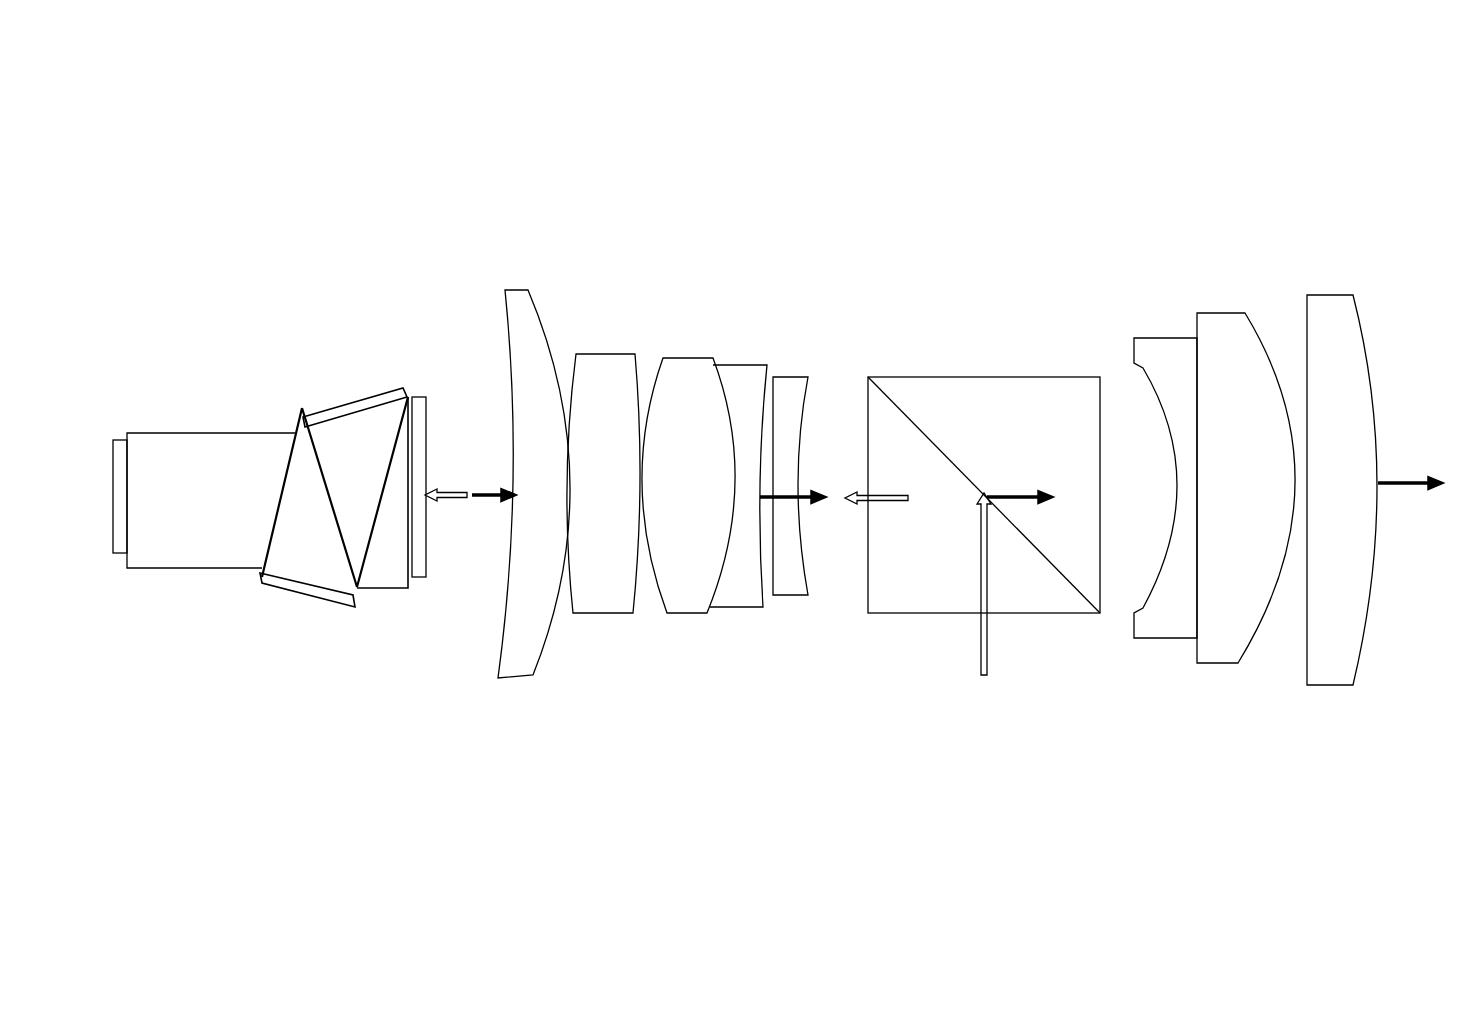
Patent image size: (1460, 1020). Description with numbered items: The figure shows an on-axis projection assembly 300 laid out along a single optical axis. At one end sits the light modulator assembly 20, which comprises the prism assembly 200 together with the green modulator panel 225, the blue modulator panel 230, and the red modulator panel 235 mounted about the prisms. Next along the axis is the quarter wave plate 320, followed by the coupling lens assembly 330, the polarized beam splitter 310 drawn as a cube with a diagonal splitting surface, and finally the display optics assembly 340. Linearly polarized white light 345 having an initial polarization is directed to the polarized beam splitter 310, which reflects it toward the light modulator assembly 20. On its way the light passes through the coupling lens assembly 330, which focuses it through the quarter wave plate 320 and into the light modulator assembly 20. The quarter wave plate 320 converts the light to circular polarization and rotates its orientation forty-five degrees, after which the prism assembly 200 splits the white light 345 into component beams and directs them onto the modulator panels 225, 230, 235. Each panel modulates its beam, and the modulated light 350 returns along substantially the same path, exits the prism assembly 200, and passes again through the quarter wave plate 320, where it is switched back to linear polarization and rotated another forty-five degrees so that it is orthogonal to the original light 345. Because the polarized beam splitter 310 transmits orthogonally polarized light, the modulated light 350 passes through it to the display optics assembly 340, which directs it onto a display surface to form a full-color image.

The projection assembly 300 is at (936, 94).
The light modulator assembly 20 is at (252, 384).
The prism assembly 200 is at (201, 580).
The red modulator panel 235 is at (123, 433).
The green modulator panel 225 is at (357, 397).
The blue modulator panel 230 is at (317, 598).
The quarter wave plate 320 is at (423, 397).
The linearly polarized white light 345 is at (450, 483).
The modulated light 350 is at (492, 500).
The coupling lens assembly 330 is at (705, 285).
The polarized beam splitter 310 is at (983, 377).
The display optics assembly 340 is at (1271, 270).